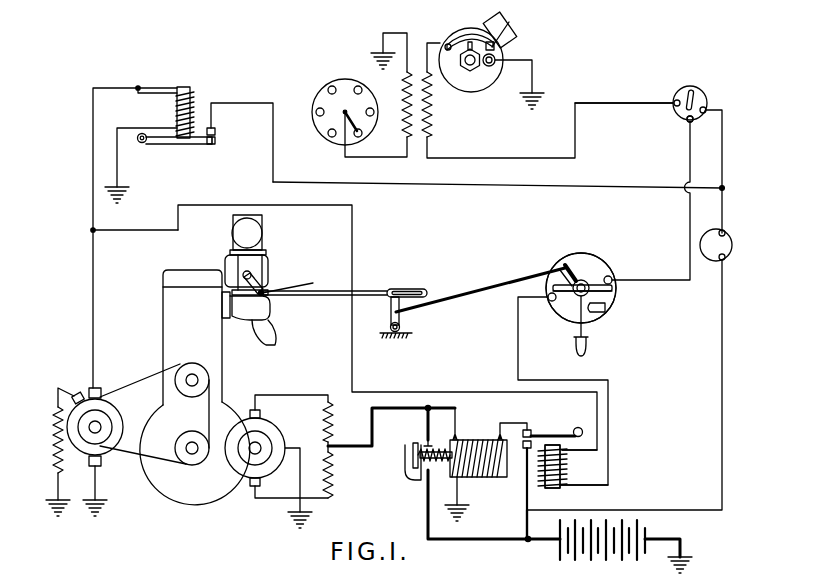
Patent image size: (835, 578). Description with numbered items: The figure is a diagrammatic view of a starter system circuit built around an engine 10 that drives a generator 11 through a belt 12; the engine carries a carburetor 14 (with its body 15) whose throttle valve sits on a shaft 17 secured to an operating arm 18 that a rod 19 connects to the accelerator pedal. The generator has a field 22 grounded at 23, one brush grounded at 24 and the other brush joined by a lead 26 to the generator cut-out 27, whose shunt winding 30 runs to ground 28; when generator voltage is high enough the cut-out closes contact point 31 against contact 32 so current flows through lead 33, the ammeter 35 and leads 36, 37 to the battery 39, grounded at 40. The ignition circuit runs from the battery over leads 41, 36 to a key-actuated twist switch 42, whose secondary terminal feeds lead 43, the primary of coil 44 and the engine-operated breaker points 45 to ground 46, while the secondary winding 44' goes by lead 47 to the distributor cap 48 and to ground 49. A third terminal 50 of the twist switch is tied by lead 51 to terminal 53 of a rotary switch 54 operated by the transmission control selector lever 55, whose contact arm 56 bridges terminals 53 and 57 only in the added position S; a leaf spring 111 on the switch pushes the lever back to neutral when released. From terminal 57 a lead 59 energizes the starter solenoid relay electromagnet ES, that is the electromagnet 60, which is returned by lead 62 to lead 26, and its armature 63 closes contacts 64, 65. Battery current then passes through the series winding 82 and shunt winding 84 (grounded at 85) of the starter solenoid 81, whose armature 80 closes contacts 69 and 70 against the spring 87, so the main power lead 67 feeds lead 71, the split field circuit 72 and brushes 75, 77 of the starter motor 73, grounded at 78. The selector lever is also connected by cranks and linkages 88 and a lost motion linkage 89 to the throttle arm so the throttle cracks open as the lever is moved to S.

The power source 10 is at (162, 305).
The generator 11 is at (115, 394).
The belt 12 is at (166, 378).
The carburetor 14 is at (266, 233).
The carburetor 15 is at (268, 306).
The shaft 17 is at (261, 274).
The operating arm 18 is at (289, 281).
The rod 19 is at (315, 288).
The field 22 is at (52, 450).
The ground 23 is at (54, 494).
The ground 24 is at (95, 489).
The lead 26 is at (93, 340).
The generator cut-out 27 is at (195, 100).
The ground 28 is at (118, 172).
The shunt winding 30 is at (158, 93).
The contact point 31 is at (216, 144).
The contact 32 is at (216, 131).
The lead 33 is at (482, 184).
The ammeter 35 is at (733, 249).
The lead 36 is at (723, 394).
The lead 37 is at (527, 520).
The battery 39 is at (574, 562).
The ground 40 is at (685, 554).
The lead 41 is at (722, 175).
The key-actuated twist switch 42 is at (706, 92).
The lead 43 is at (610, 103).
The coil 44 is at (547, 100).
The secondary winding 44' is at (394, 87).
The breaker points 45 is at (482, 29).
The ground 46 is at (535, 81).
The lead 47 is at (344, 157).
The distributor cap 48 is at (318, 83).
The ground 49 is at (388, 33).
The third terminal 50 is at (687, 122).
The lead 51 is at (690, 228).
The terminal 53 is at (614, 278).
The switch 54 is at (616, 297).
The transmission control selector lever 55 is at (589, 347).
The rotatable contact arm 56 is at (566, 294).
The terminal 57 is at (552, 301).
The lead 59 is at (609, 390).
The electromagnet 60 is at (552, 488).
The lead 62 is at (352, 378).
The armature 63 is at (558, 430).
The contact 64 is at (525, 458).
The contact 65 is at (532, 433).
The lead 67 is at (450, 540).
The contact point 69 is at (424, 466).
The contact 70 is at (424, 439).
The lead 71 is at (419, 407).
The split field circuit 72 is at (331, 422).
The starter motor 73 is at (272, 428).
The starter brush 75 is at (246, 409).
The starter brush 77 is at (252, 490).
The ground 78 is at (305, 516).
The movable armature 80 is at (413, 462).
The starter solenoid 81 is at (458, 438).
The series winding 82 is at (484, 439).
The shunt winding 84 is at (479, 477).
The ground 85 is at (463, 509).
The spring 87 is at (430, 428).
The cranks and linkages 88 is at (454, 305).
The lost motion linkage 89 is at (406, 288).
The leaf spring 111 is at (592, 316).
The starter solenoid relay electromagnet ES is at (570, 466).